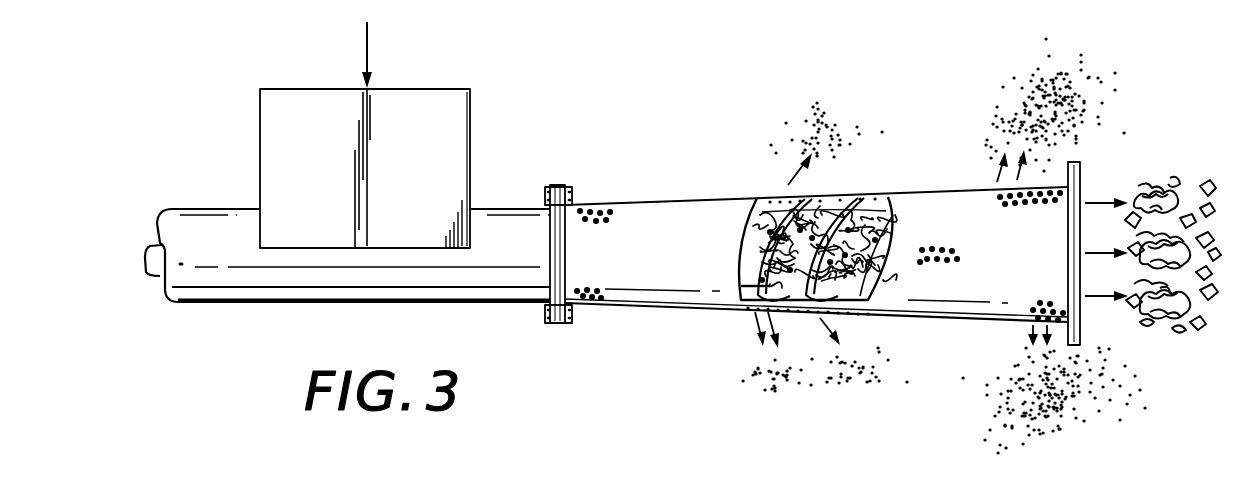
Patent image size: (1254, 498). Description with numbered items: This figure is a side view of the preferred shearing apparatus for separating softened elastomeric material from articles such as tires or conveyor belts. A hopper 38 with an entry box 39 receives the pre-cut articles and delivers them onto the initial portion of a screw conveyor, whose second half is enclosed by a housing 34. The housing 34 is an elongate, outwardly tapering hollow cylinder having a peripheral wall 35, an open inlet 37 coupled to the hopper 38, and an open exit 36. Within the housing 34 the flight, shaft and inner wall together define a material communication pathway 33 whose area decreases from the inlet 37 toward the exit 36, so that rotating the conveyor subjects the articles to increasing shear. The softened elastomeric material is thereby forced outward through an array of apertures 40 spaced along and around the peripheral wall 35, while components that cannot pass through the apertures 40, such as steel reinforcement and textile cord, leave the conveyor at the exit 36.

The material communication pathway 33 is at (762, 196).
The housing 34 is at (647, 202).
The peripheral wall 35 is at (986, 284).
The open exit 36 is at (1080, 180).
The open inlet 37 is at (553, 185).
The hopper 38 is at (238, 188).
The entry box 39 is at (296, 129).
The apertures 40 is at (952, 247).